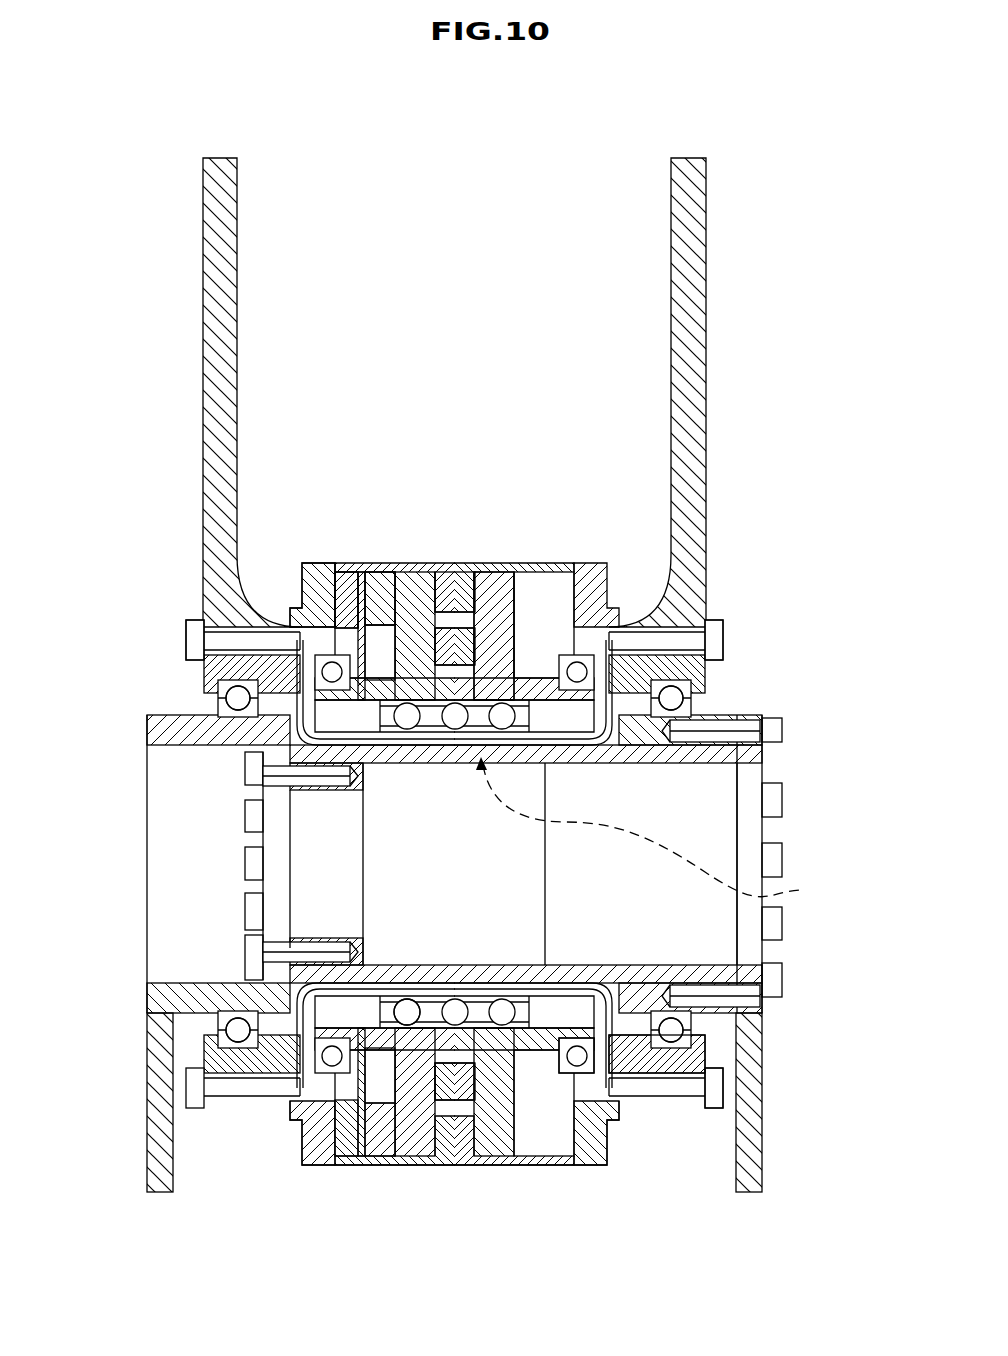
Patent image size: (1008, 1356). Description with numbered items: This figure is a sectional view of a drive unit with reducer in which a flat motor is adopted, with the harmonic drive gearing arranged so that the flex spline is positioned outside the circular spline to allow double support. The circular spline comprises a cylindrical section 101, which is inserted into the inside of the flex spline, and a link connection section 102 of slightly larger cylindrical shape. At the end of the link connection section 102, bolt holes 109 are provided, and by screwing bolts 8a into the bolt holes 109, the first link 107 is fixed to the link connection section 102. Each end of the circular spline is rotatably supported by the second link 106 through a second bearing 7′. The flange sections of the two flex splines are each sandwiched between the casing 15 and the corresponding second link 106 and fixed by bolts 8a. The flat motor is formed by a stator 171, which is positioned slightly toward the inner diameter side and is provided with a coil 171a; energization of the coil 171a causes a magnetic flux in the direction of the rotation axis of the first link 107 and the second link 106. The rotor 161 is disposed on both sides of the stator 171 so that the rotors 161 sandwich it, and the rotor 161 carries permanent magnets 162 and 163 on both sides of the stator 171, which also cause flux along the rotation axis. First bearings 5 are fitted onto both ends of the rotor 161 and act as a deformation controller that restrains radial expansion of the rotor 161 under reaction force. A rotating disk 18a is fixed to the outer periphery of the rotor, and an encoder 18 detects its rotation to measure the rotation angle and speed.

The second link 106 is at (213, 258).
The first link 107 is at (160, 1120).
The bolt holes 109 is at (752, 730).
The bolts 8a is at (712, 640).
The first bearings 5 is at (345, 675).
The second bearing 7′ is at (212, 693).
The link connection section 102 is at (725, 1090).
The stator 171 is at (455, 562).
The coil 171a is at (462, 562).
The encoder 18 is at (343, 563).
The rotating disk 18a is at (366, 563).
The permanent magnet 163 is at (421, 563).
The permanent magnet 162 is at (509, 563).
The rotor 161 is at (523, 597).
The cylindrical section 101 is at (442, 1100).
The casing 15 is at (527, 1172).